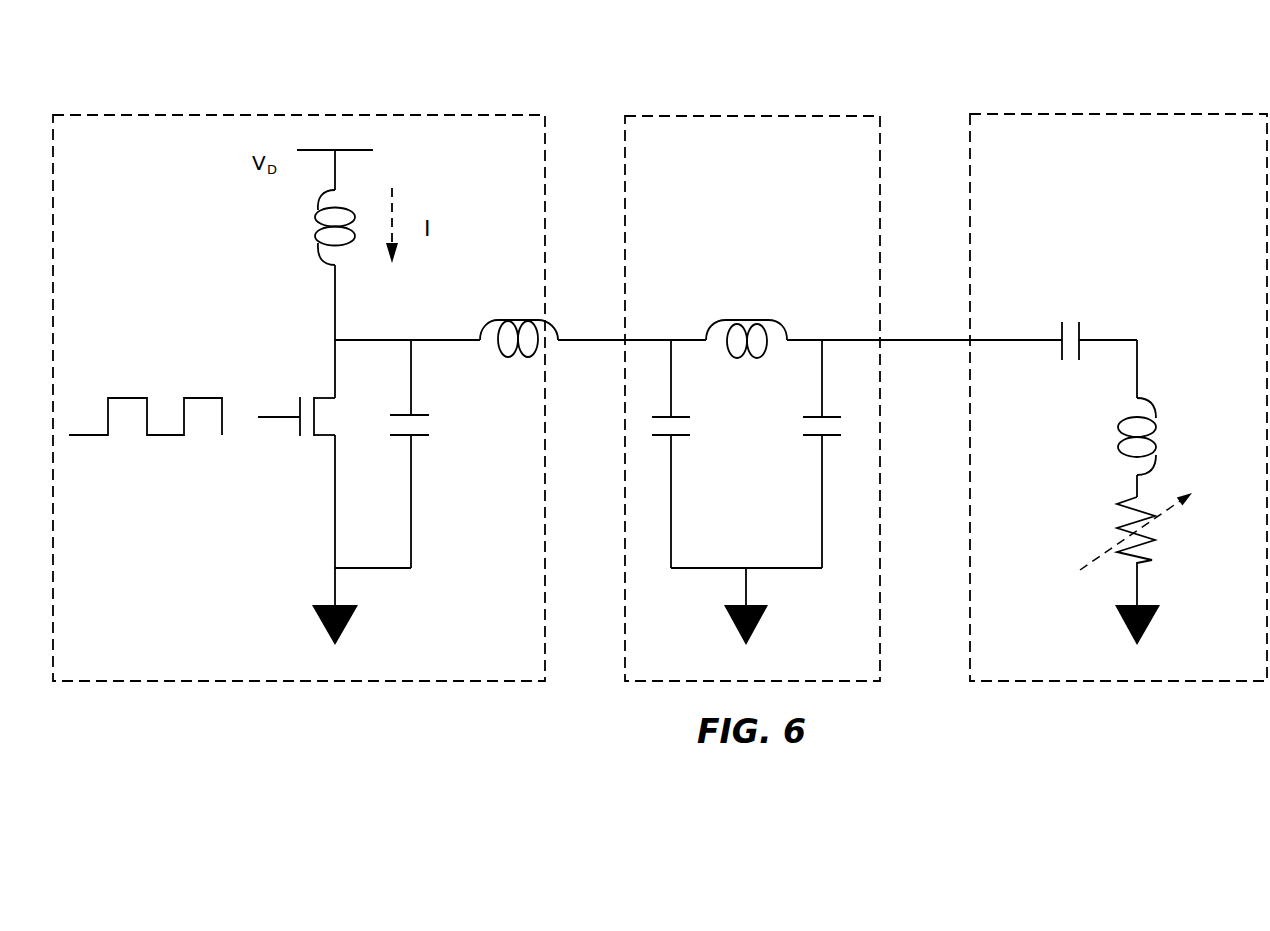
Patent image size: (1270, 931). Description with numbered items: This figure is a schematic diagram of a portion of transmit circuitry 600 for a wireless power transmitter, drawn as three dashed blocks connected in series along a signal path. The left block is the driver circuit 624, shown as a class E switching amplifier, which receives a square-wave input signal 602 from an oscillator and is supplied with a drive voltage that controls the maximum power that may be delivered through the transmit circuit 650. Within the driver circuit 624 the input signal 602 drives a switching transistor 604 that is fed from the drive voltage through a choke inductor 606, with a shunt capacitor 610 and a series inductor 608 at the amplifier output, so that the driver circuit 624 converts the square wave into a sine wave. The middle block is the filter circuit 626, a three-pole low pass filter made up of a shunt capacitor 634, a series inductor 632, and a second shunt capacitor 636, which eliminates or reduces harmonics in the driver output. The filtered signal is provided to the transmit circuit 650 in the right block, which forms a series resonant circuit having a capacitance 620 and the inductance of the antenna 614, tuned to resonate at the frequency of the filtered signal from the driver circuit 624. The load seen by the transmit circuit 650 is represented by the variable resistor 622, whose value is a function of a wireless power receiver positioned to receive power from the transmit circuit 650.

The transmit circuitry 600 is at (221, 65).
The input signal 602 is at (123, 398).
The transistor 604 is at (323, 396).
The inductor 606 is at (315, 208).
The inductor 608 is at (487, 322).
The capacitor 610 is at (418, 413).
The antenna 614 is at (1145, 400).
The capacitance 620 is at (1080, 330).
The variable resistor 622 is at (1128, 497).
The driver circuit 624 is at (408, 115).
The filter circuit 626 is at (811, 117).
The inductor 632 is at (767, 322).
The capacitor 634 is at (679, 414).
The capacitor 636 is at (829, 414).
The transmit circuit 650 is at (1187, 114).